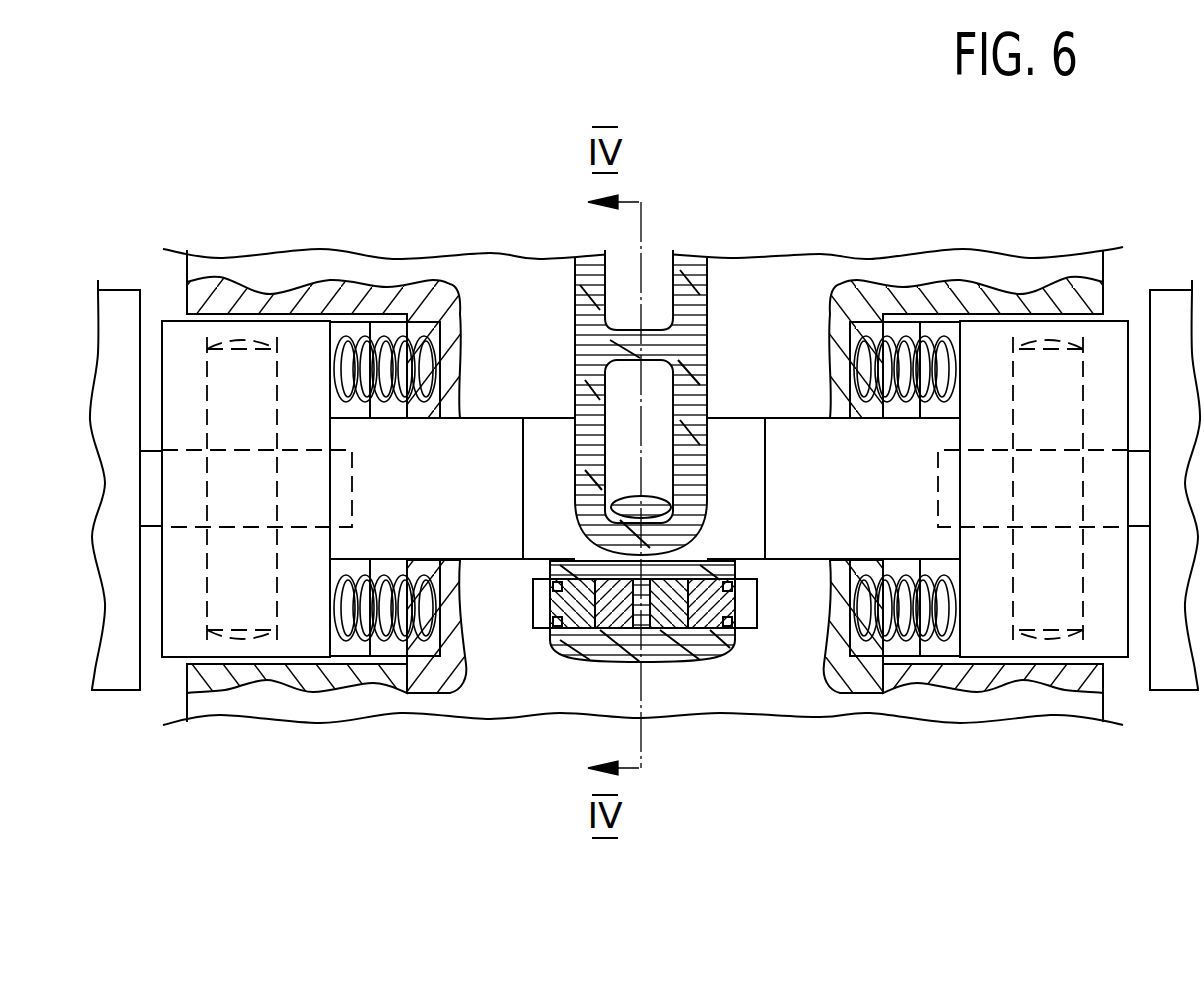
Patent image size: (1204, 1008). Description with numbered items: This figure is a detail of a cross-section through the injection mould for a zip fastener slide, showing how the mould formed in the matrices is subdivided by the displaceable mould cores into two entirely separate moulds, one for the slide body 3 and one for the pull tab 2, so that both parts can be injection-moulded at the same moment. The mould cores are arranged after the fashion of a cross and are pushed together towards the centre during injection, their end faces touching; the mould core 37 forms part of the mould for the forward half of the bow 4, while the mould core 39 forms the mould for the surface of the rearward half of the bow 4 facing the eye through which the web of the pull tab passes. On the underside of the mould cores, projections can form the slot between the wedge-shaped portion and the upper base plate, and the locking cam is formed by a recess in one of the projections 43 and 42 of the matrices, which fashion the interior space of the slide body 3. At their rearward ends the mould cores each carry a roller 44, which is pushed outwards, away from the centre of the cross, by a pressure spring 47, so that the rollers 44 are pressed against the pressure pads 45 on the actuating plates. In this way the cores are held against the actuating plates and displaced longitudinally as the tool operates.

The pull tab 2 is at (697, 265).
The slide body 3 is at (660, 660).
The bow 4 is at (650, 500).
The mould core 37 is at (825, 470).
The mould core 39 is at (493, 450).
The projection 42 is at (733, 657).
The projection 43 is at (693, 660).
The roller 44 is at (152, 505).
The pressure pad 45 is at (118, 315).
The pressure spring 47 is at (338, 395).